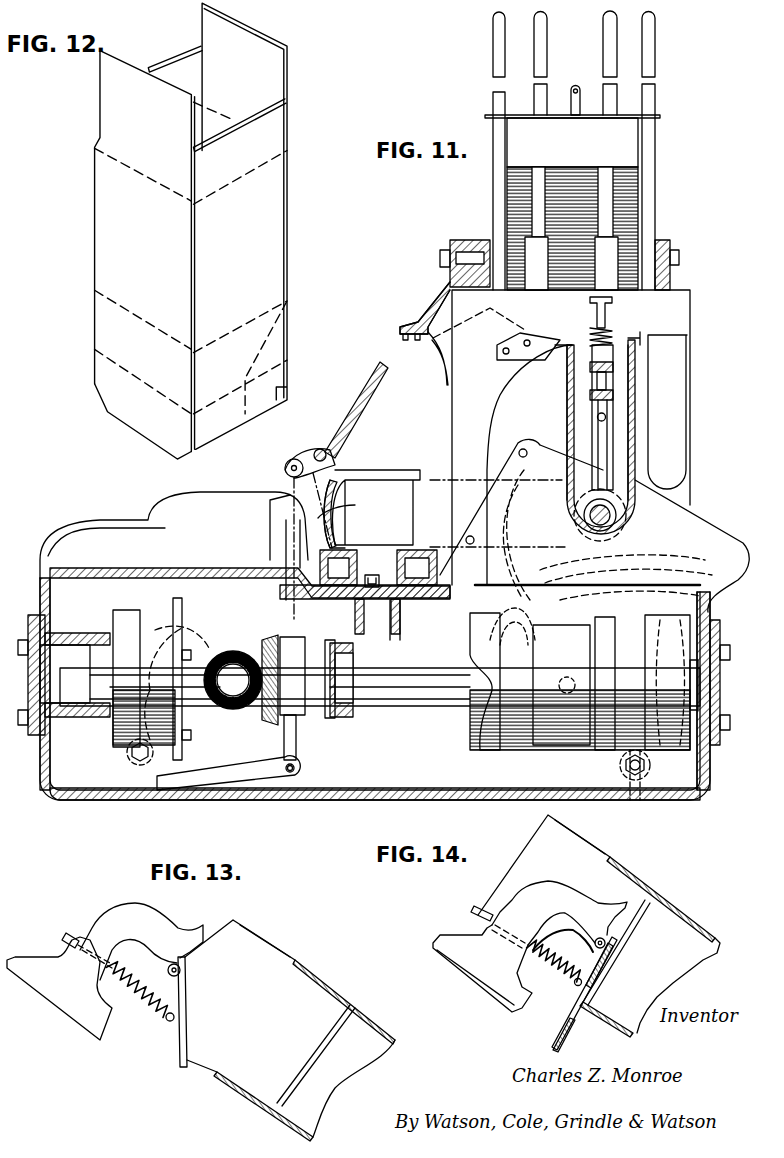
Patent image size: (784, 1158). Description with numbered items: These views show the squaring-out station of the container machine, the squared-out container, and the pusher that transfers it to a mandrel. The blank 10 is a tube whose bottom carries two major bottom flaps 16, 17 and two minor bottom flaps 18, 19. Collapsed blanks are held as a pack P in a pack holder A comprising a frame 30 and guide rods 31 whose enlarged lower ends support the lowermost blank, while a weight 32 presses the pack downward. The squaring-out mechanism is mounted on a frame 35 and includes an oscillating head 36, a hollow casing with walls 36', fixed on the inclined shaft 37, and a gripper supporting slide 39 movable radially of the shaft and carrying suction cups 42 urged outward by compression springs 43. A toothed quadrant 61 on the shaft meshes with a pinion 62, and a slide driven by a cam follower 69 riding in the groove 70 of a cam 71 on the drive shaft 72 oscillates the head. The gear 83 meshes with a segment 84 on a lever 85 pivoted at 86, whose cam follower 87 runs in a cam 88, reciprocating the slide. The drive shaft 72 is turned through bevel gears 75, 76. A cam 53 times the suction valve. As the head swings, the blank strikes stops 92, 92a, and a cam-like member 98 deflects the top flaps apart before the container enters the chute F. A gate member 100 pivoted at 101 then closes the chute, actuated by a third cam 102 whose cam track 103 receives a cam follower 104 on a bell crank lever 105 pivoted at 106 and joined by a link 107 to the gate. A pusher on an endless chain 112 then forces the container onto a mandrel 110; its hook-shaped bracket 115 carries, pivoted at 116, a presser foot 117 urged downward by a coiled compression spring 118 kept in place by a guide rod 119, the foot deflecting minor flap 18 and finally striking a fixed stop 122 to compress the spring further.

In FIG. 12, the blank 10 is at (84, 218).
In FIG. 13, the blank 10 is at (363, 1000).
In FIG. 14, the blank 10 is at (702, 925).
In FIG. 12, the major bottom flap 16 is at (102, 99).
In FIG. 13, the major bottom flap 16 is at (260, 958).
In FIG. 14, the major bottom flap 16 is at (585, 850).
In FIG. 12, the major bottom flap 17 is at (256, 61).
In FIG. 12, the minor bottom flap 18 is at (257, 121).
In FIG. 13, the minor bottom flap 18 is at (225, 1082).
In FIG. 14, the minor bottom flap 18 is at (608, 950).
In FIG. 12, the minor bottom flap 19 is at (161, 63).
In FIG. 13, the minor bottom flap 19 is at (323, 981).
In FIG. 14, the minor bottom flap 19 is at (640, 888).
In FIG. 11, the guide rods 31 is at (647, 50).
In FIG. 11, the weight 32 is at (640, 141).
In FIG. 11, the stack of blanks P is at (505, 188).
In FIG. 11, the magazine assembly A is at (663, 192).
In FIG. 11, the frame 30 is at (667, 242).
In FIG. 11, the blank contacting portions 42 is at (616, 302).
In FIG. 11, the coiled compression springs 43 is at (616, 336).
In FIG. 11, the oscillating head 36 is at (572, 433).
In FIG. 11, the channel wall 36' is at (604, 418).
In FIG. 11, the gripper supporting slide 39 is at (615, 368).
In FIG. 11, the inclined shaft 37 is at (617, 512).
In FIG. 11, the gear 83 is at (572, 506).
In FIG. 11, the segment 84 is at (690, 560).
In FIG. 11, the lever 85 is at (702, 562).
In FIG. 11, the toothed quadrant 61 is at (520, 560).
In FIG. 11, the pinion 62 is at (533, 604).
In FIG. 11, the cam-like member 98 is at (540, 338).
In FIG. 11, the stop member 92 is at (430, 345).
In FIG. 11, the stop member 92a is at (445, 388).
In FIG. 11, the gate member 100 is at (367, 395).
In FIG. 11, the pivot 101 is at (318, 449).
In FIG. 11, the frame 35 is at (45, 560).
In FIG. 11, the cam 53 is at (160, 650).
In FIG. 11, the chute F is at (337, 507).
In FIG. 11, the cam track 103 is at (146, 612).
In FIG. 11, the third cam 102 is at (170, 628).
In FIG. 11, the link 107 is at (292, 598).
In FIG. 11, the cam follower 104 is at (178, 652).
In FIG. 11, the bevel gear 75 is at (268, 645).
In FIG. 11, the bevel gear 76 is at (292, 738).
In FIG. 11, the bell crank lever 105 is at (243, 743).
In FIG. 11, the pivot 106 is at (127, 756).
In FIG. 11, the drive shaft 72 is at (407, 694).
In FIG. 11, the endless chain 112 is at (402, 622).
In FIG. 11, the cam follower 69 is at (537, 670).
In FIG. 11, the groove 70 is at (533, 733).
In FIG. 11, the cam 71 is at (568, 745).
In FIG. 11, the cam follower 87 is at (668, 660).
In FIG. 11, the pivot 86 is at (635, 792).
In FIG. 11, the cam 88 is at (676, 750).
In FIG. 13, the mandrel 110 is at (317, 1055).
In FIG. 14, the mandrel 110 is at (695, 960).
In FIG. 13, the hook-shaped bracket 115 is at (108, 910).
In FIG. 14, the hook-shaped bracket 115 is at (545, 892).
In FIG. 13, the pivot 116 is at (181, 970).
In FIG. 14, the pivot 116 is at (598, 938).
In FIG. 13, the presser foot 117 is at (186, 1018).
In FIG. 14, the presser foot 117 is at (572, 1018).
In FIG. 13, the coiled compression spring 118 is at (145, 1012).
In FIG. 14, the coiled compression spring 118 is at (555, 977).
In FIG. 13, the guide rod 119 is at (120, 958).
In FIG. 14, the guide rod 119 is at (475, 908).
In FIG. 14, the fixed stop 122 is at (552, 1047).